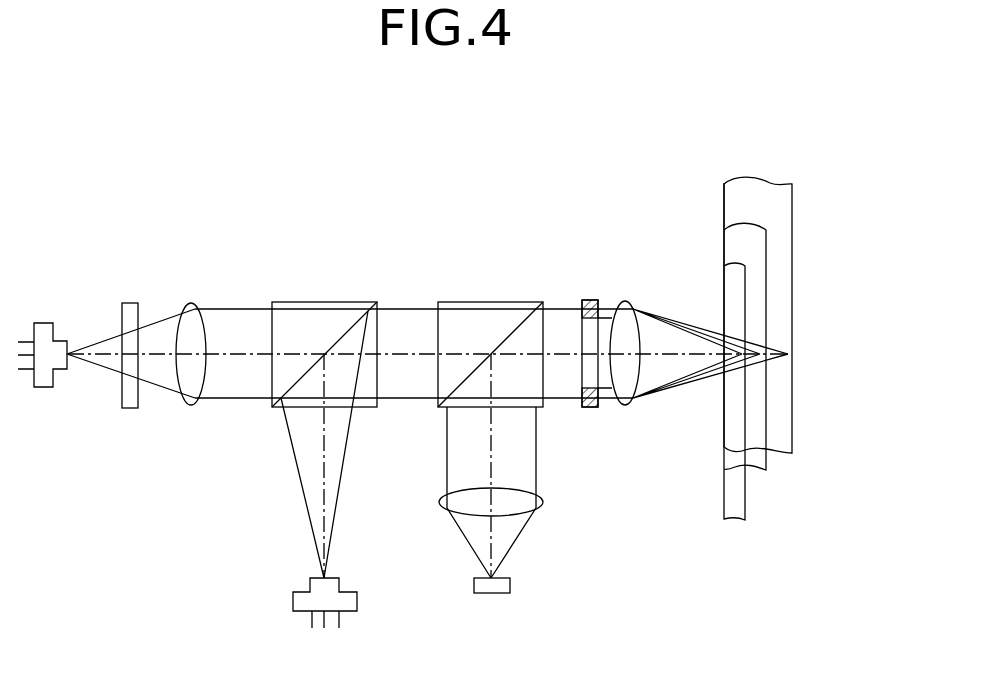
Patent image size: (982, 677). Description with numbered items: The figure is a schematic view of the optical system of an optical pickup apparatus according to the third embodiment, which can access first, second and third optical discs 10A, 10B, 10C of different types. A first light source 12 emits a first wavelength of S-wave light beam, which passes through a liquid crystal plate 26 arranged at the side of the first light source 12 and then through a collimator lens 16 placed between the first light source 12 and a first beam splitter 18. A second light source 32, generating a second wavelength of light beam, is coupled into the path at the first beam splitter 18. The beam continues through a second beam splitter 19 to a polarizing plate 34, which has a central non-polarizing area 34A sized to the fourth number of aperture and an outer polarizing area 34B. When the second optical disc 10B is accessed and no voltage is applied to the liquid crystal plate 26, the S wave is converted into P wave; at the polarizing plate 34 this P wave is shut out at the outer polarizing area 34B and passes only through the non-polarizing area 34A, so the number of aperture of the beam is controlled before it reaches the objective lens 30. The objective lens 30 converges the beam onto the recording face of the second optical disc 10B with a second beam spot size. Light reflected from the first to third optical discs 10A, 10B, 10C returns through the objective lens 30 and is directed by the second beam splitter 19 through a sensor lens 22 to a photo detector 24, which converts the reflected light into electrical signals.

The first light source 12 is at (49, 327).
The liquid crystal plate 26 is at (138, 302).
The collimator lens 16 is at (188, 307).
The first beam splitter 18 is at (377, 302).
The second beam splitter 19 is at (543, 302).
The polarizing plate 34 is at (622, 364).
The non-polarizing area 34A is at (592, 372).
The outer polarizing area 34B is at (588, 407).
The objective lens 30 is at (628, 302).
The first optical disc 10A is at (737, 495).
The second optical disc 10B is at (759, 324).
The third optical disc 10C is at (780, 267).
The sensor lens 22 is at (537, 503).
The photo detector 24 is at (503, 588).
The second light source 32 is at (357, 593).